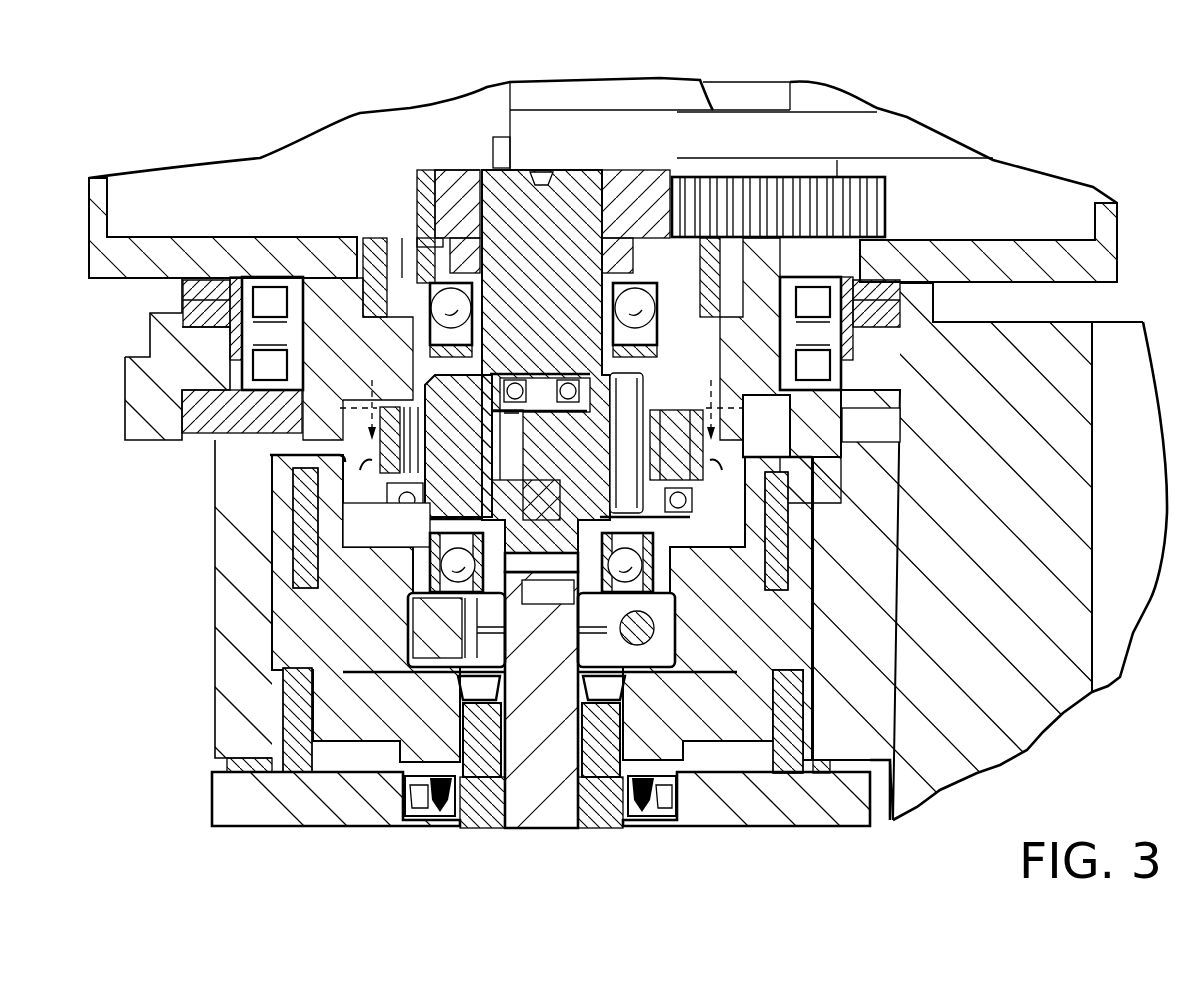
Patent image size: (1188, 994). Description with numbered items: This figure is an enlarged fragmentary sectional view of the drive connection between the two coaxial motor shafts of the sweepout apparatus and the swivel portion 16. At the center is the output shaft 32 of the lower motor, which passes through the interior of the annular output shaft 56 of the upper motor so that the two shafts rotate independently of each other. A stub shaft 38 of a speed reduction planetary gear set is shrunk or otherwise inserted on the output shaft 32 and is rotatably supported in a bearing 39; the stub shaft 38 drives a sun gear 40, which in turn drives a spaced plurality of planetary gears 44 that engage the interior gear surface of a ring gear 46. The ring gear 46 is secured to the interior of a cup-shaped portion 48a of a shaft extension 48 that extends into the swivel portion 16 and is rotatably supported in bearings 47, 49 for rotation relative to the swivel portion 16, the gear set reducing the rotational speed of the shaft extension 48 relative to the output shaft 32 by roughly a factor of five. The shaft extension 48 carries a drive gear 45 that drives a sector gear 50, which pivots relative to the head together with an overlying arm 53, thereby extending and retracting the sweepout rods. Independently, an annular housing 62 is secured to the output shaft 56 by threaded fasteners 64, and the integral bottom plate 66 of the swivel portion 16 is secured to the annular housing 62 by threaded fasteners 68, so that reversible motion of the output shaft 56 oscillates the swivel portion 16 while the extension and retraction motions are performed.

The swivel portion 16 is at (1020, 183).
The output shaft 32 is at (550, 810).
The stub shaft 38 is at (557, 515).
The bearing 39 is at (515, 375).
The sun gear 40 is at (492, 455).
The planetary gears 44 is at (658, 423).
The drive gear 45 is at (448, 177).
The ring gear 46 is at (716, 430).
The bearing 47 is at (427, 193).
The shaft extension 48 is at (487, 195).
The cup-shaped portion 48a is at (490, 520).
The bearing 49 is at (385, 505).
The sector gear 50 is at (820, 190).
The overlying arm 53 is at (905, 122).
The output shaft 56 is at (603, 800).
The annular housing 62 is at (822, 620).
The threaded fasteners 64 is at (300, 520).
The bottom plate 66 is at (1073, 285).
The threaded fasteners 68 is at (345, 268).